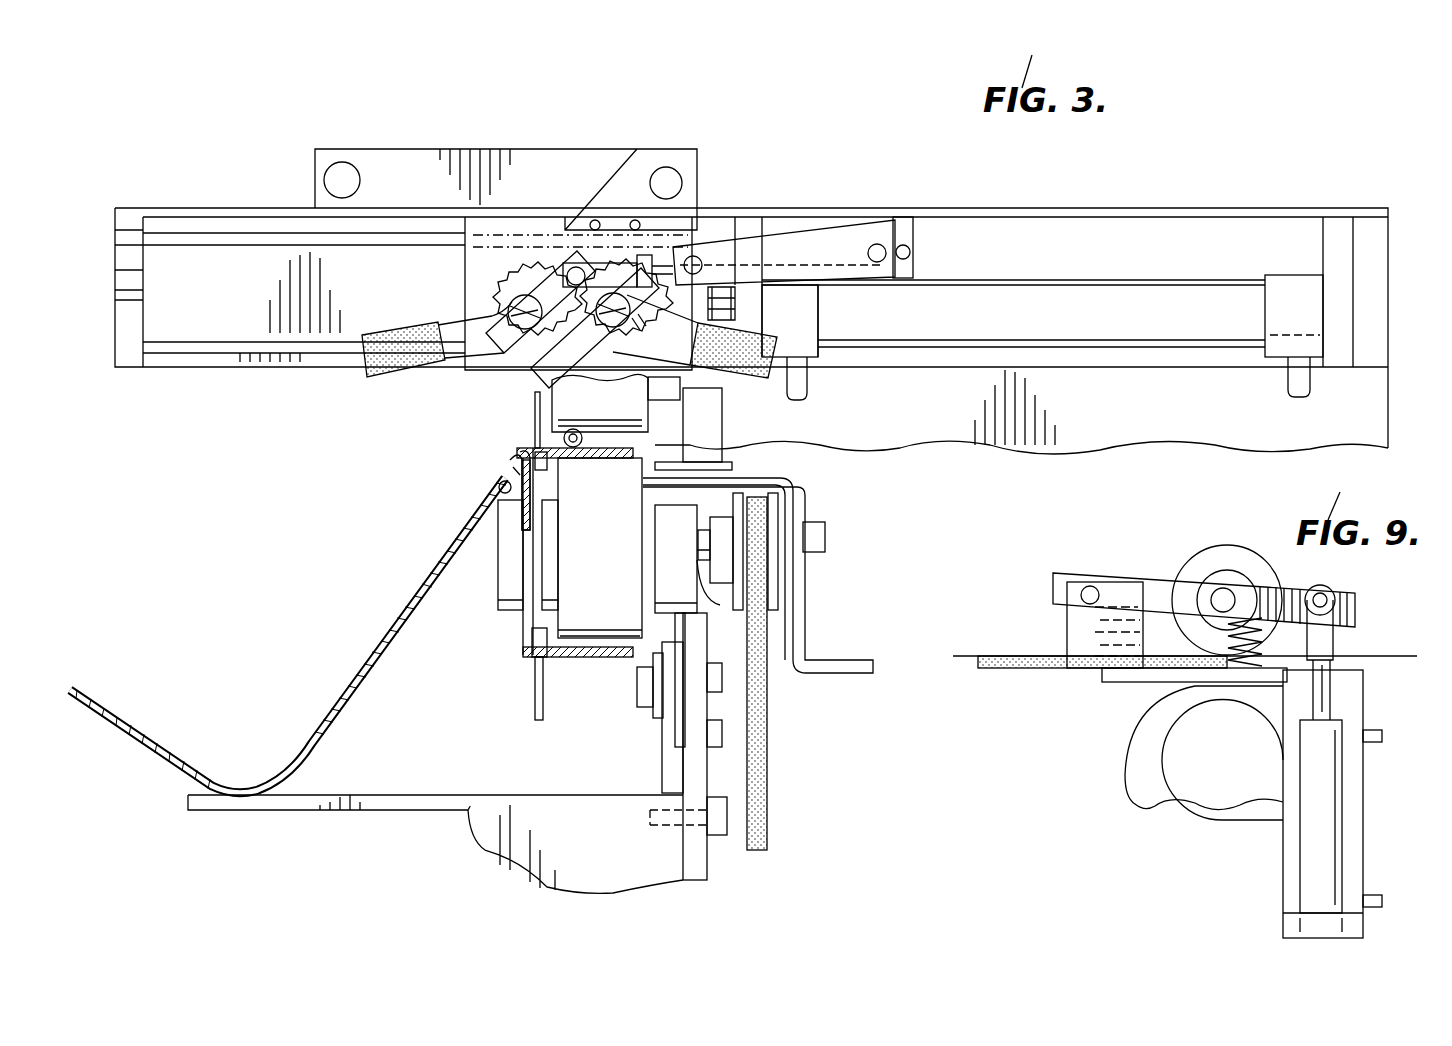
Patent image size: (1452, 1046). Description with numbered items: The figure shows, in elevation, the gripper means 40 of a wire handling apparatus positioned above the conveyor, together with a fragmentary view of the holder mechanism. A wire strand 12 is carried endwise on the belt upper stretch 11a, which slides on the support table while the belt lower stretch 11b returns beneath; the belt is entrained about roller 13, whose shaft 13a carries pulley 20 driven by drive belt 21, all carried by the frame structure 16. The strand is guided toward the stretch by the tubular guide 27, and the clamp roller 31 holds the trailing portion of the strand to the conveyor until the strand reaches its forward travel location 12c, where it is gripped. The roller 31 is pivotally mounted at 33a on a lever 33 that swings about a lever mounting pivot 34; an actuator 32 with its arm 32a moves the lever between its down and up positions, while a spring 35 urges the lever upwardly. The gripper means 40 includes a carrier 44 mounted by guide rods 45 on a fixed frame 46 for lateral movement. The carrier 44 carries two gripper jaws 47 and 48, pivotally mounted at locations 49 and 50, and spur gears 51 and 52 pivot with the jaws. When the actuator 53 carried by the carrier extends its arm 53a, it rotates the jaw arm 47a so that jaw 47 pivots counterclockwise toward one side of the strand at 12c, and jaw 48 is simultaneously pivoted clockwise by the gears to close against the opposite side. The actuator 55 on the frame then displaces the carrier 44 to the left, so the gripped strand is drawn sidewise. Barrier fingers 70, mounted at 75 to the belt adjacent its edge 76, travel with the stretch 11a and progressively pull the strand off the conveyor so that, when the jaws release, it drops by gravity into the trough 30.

In FIG. 3, the gripper means 40 is at (768, 182).
In FIG. 3, the carrier 44 is at (458, 262).
In FIG. 3, the guide rods 45 is at (212, 237).
In FIG. 3, the fixed frame 46 is at (155, 375).
In FIG. 3, the gripper jaw 47 is at (380, 378).
In FIG. 3, the jaw arm 47a is at (553, 268).
In FIG. 3, the gripper jaw 48 is at (760, 342).
In FIG. 3, the pivot location 49 is at (523, 298).
In FIG. 3, the pivot location 50 is at (612, 295).
In FIG. 3, the spur gear 51 is at (520, 298).
In FIG. 3, the spur gear 52 is at (548, 372).
In FIG. 3, the actuator 53 is at (823, 245).
In FIG. 3, the actuator arm 53a is at (673, 247).
In FIG. 3, the actuator 55 is at (1013, 308).
In FIG. 3, the forward travel location of strand 12c is at (575, 430).
In FIG. 3, the tubular guide 27 is at (565, 440).
In FIG. 3, the clamp roller 31 is at (642, 402).
In FIG. 9, the clamp roller 31 is at (1190, 562).
In FIG. 3, the belt upper stretch 11a is at (628, 446).
In FIG. 9, the belt upper stretch 11a is at (1018, 676).
In FIG. 3, the barrier fingers 70 is at (530, 440).
In FIG. 3, the belt edge 76 is at (515, 452).
In FIG. 3, the finger mounting 75 is at (541, 474).
In FIG. 3, the roller 13 is at (600, 599).
In FIG. 3, the shaft 13a is at (720, 602).
In FIG. 3, the pulley 20 is at (770, 505).
In FIG. 3, the drive belt 21 is at (767, 822).
In FIG. 3, the frame structure 16 is at (725, 706).
In FIG. 3, the belt lower stretch 11b is at (585, 660).
In FIG. 3, the trough 30 is at (153, 775).
In FIG. 9, the wire strand 12 is at (965, 654).
In FIG. 9, the lever mounting pivot 34 is at (1090, 584).
In FIG. 9, the lever 33 is at (1284, 585).
In FIG. 9, the roller pivot 33a is at (1224, 588).
In FIG. 9, the actuator 32 is at (1330, 838).
In FIG. 9, the actuator arm 32a is at (1337, 612).
In FIG. 9, the spring 35 is at (1240, 660).